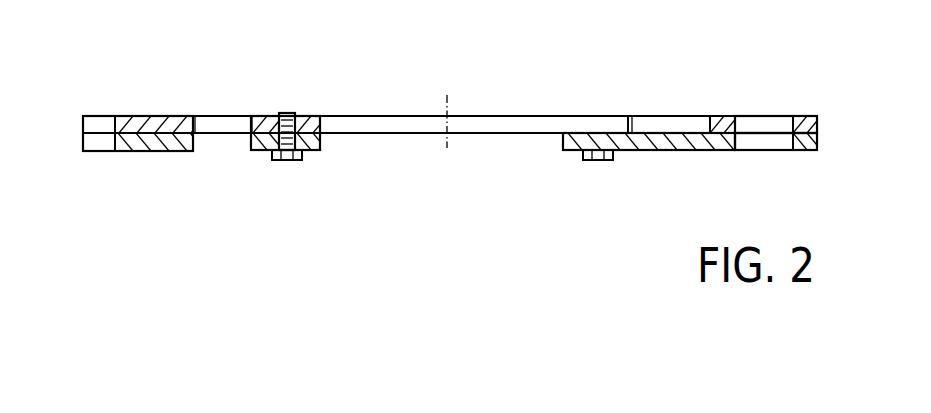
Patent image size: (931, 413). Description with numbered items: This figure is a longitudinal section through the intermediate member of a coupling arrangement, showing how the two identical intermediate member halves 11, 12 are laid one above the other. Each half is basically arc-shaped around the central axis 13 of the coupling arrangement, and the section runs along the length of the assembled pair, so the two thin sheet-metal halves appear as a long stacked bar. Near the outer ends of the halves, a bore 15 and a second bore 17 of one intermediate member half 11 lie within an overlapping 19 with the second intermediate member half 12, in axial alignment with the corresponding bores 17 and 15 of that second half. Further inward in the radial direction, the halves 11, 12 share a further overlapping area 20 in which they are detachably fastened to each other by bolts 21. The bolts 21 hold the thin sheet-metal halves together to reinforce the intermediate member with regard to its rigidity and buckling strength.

The intermediate member half 11 is at (165, 144).
The intermediate member half 12 is at (140, 124).
The central axis 13 is at (448, 134).
The bore 15 is at (777, 146).
The second bore 17 is at (750, 122).
The overlapping 19 is at (725, 92).
The overlapping area 20 is at (313, 95).
The bolt 21 is at (285, 161).